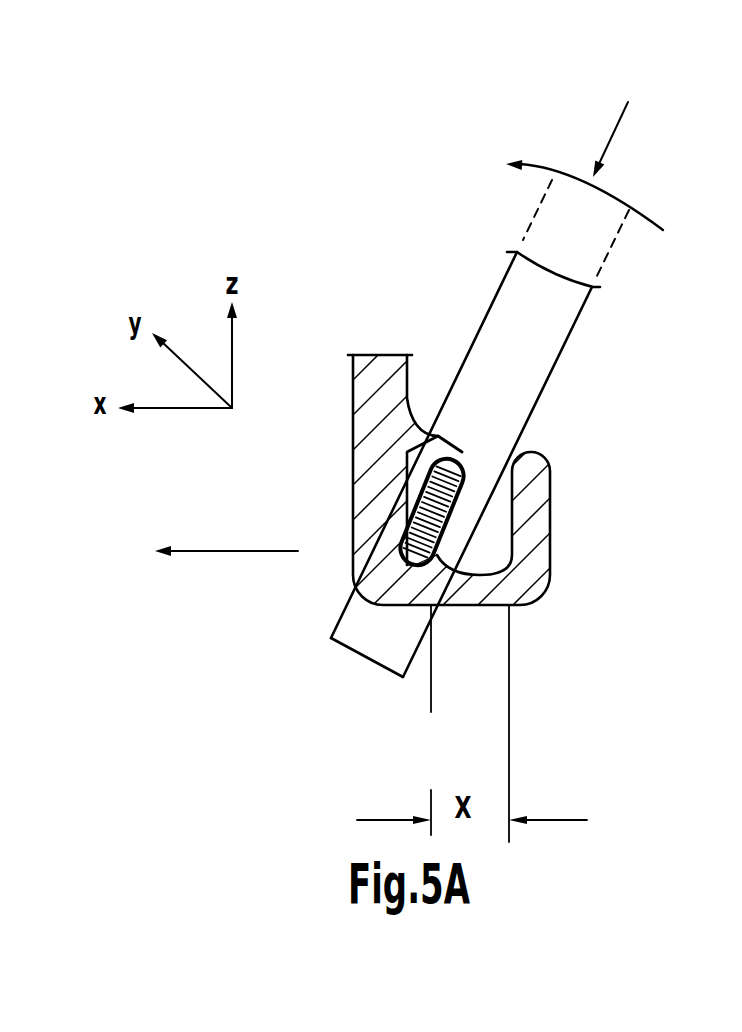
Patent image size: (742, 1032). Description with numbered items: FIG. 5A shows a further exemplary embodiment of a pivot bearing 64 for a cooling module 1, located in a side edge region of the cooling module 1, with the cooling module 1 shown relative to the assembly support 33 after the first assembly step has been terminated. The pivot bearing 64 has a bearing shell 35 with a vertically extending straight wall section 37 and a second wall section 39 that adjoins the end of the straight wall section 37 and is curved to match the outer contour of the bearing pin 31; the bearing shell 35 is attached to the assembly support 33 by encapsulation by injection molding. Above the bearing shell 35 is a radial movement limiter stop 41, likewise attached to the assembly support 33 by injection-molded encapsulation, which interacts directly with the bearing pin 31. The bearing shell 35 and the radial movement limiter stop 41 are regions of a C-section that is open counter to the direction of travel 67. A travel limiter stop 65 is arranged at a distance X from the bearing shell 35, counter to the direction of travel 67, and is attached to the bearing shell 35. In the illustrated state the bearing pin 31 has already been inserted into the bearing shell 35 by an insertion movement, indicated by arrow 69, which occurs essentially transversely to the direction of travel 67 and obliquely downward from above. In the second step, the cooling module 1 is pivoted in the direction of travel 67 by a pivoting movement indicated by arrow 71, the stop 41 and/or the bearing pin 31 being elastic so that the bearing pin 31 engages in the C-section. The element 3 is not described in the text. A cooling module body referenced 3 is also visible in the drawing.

The cooling module 1 is at (517, 365).
The frame 3 is at (741, 242).
The bearing pin 31 is at (470, 504).
The assembly support 33 is at (340, 388).
The bearing shell 35 is at (390, 577).
The straight wall section 37 is at (470, 504).
The second wall section 39 is at (421, 560).
The radial movement limiter stop 41 is at (441, 440).
The pivot bearing 64 is at (540, 437).
The travel limiter stop 65 is at (502, 541).
The direction of travel 67 is at (242, 553).
The arrow indicating insertion movement 69 is at (620, 137).
The arrow indicating pivoting movement 71 is at (563, 173).